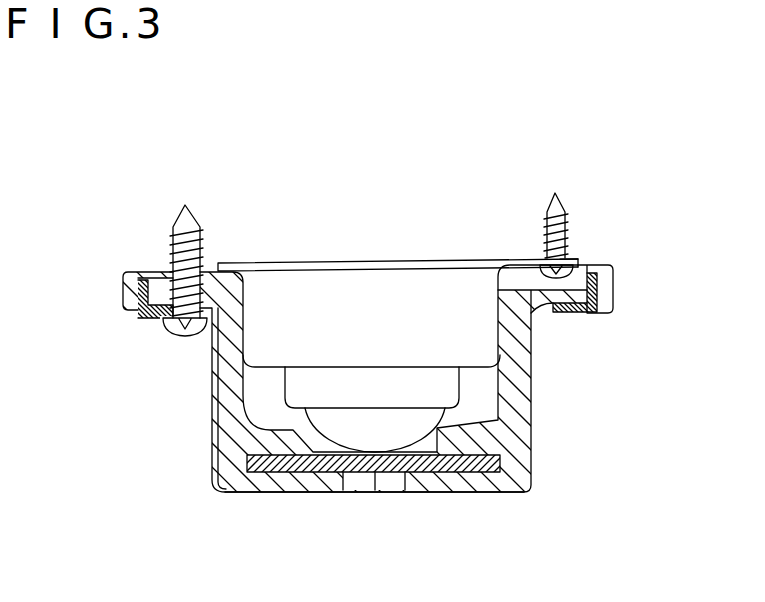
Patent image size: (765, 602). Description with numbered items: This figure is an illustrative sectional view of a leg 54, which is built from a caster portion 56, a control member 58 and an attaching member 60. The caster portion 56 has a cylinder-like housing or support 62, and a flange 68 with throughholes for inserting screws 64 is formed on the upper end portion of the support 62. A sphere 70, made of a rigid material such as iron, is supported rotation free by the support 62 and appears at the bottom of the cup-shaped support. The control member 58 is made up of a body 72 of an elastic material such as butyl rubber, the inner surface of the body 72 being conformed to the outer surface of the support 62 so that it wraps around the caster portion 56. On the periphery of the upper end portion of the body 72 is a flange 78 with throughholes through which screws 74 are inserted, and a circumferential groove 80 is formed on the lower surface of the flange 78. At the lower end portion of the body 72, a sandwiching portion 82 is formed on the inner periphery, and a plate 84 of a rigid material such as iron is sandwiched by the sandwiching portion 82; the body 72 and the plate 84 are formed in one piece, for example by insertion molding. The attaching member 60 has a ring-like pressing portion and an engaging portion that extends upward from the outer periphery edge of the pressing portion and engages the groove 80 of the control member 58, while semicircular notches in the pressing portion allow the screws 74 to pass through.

The leg 54 is at (143, 212).
The caster portion 56 is at (405, 244).
The control member 58 is at (548, 393).
The attaching member 60 is at (600, 314).
The support 62 is at (326, 297).
The screws 64 is at (567, 219).
The flange 68 is at (533, 258).
The sphere 70 is at (417, 421).
The body 72 is at (522, 467).
The screws 74 is at (197, 240).
The flange 78 is at (615, 278).
The circumferential groove 80 is at (597, 296).
The sandwiching portion 82 is at (458, 471).
The plate 84 is at (378, 466).